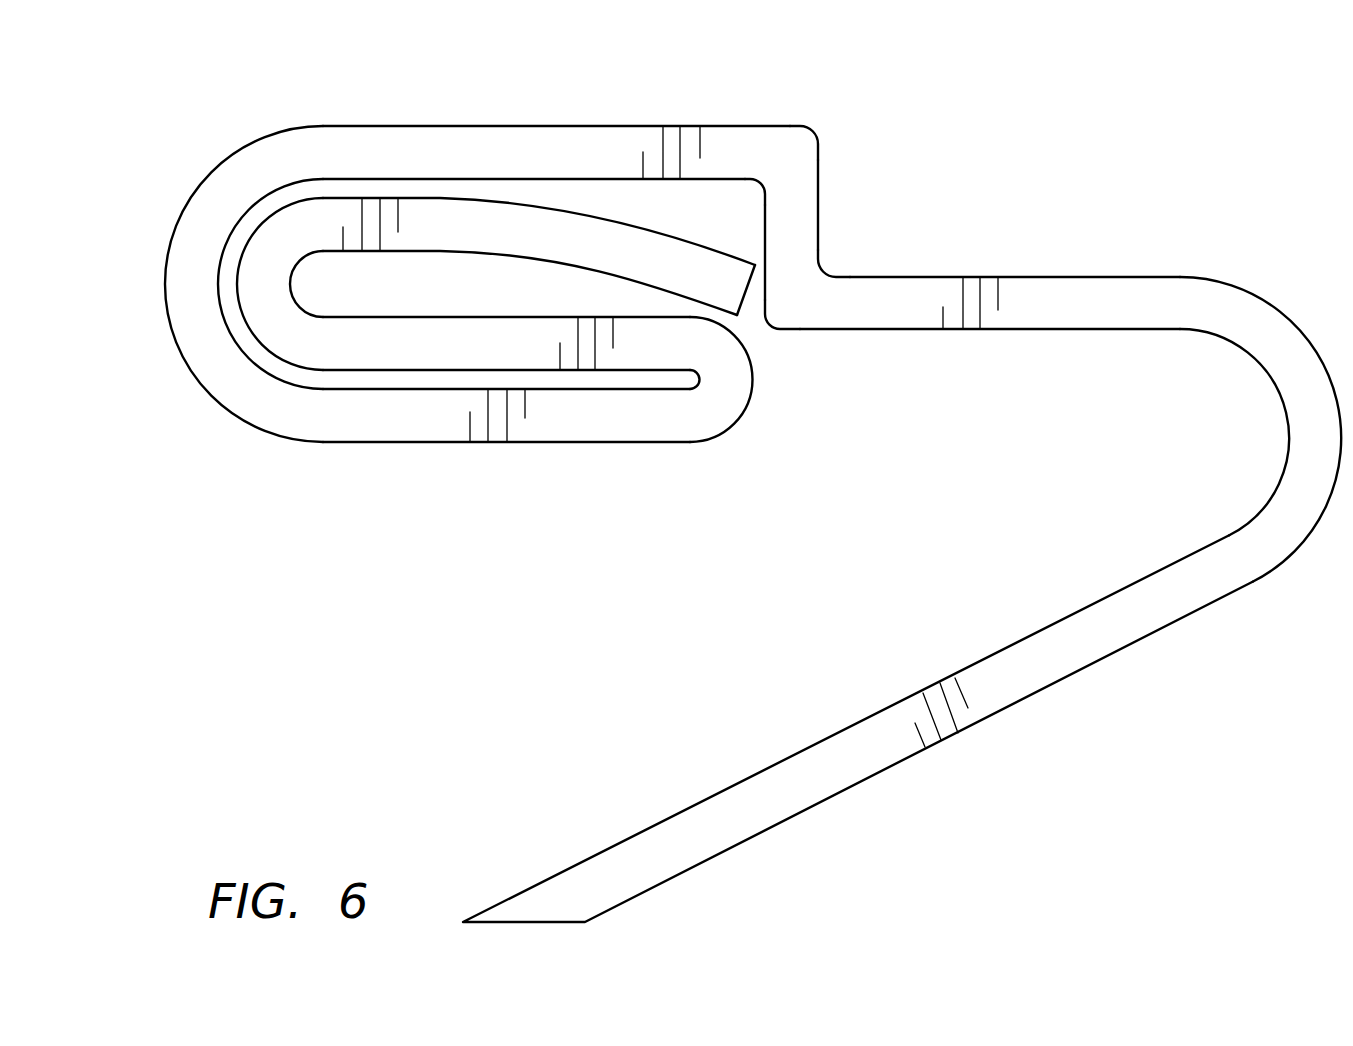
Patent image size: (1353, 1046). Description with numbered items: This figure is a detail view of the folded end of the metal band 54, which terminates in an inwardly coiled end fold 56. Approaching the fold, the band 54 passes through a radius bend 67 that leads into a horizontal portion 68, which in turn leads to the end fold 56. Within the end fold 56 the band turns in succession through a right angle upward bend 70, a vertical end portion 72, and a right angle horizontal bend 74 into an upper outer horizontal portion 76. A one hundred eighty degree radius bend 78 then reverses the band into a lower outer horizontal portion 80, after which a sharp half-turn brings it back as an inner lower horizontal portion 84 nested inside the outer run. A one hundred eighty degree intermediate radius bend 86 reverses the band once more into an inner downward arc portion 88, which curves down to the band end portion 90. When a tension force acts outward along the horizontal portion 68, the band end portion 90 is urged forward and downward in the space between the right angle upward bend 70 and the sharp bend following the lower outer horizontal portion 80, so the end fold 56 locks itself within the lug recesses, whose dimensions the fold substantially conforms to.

The end fold 56 is at (248, 125).
The band 54 is at (870, 725).
The radius bend 67 is at (1297, 410).
The horizontal portion 68 is at (1142, 295).
The right angle upward bend 70 is at (795, 295).
The vertical end portion 72 is at (802, 226).
The right angle horizontal bend 74 is at (790, 155).
The upper outer horizontal portion 76 is at (528, 137).
The 180 degree radius bend 78 is at (237, 388).
The lower outer horizontal portion 80 is at (438, 430).
The inner lower horizontal portion 84 is at (430, 330).
The 180 degree intermediate radius bend 86 is at (278, 268).
The inner downward arc portion 88 is at (614, 232).
The band end portion 90 is at (724, 284).